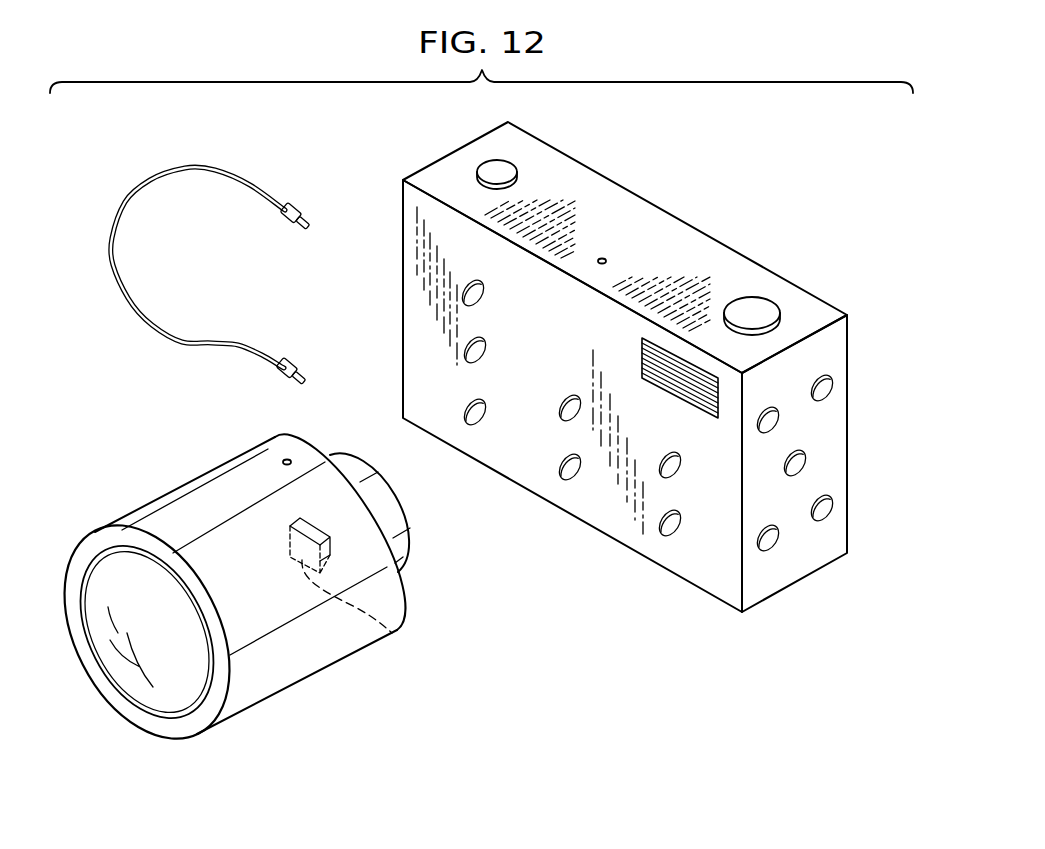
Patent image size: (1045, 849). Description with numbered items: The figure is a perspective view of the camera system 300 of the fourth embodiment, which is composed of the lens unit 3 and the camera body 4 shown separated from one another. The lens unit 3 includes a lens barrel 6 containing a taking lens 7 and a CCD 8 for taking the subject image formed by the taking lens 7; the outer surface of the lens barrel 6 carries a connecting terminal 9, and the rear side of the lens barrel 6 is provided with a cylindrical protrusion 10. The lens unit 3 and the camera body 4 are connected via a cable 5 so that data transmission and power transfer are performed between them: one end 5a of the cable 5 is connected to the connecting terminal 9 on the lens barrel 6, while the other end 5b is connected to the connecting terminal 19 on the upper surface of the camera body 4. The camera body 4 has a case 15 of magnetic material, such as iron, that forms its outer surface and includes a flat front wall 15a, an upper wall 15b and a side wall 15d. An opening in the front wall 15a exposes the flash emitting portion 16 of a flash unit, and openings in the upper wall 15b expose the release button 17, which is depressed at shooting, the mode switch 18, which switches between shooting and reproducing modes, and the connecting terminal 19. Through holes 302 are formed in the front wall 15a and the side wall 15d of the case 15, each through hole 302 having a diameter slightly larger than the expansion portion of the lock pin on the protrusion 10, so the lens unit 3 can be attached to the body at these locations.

The lens unit 3 is at (261, 588).
The camera body 4 is at (659, 386).
The cable 5 is at (204, 277).
The one end of the cable 5a is at (292, 365).
The other end of the cable 5b is at (288, 220).
The lens barrel 6 is at (250, 693).
The taking lens 7 is at (160, 690).
The CCD 8 is at (388, 628).
The connecting terminal 9 is at (287, 462).
The cylindrical protrusion 10 is at (405, 537).
The case 15 is at (659, 390).
The front wall 15a is at (612, 522).
The upper wall 15b is at (698, 244).
The side wall 15d is at (828, 351).
The flash emitting portion 16 is at (655, 378).
The release button 17 is at (505, 168).
The mode switch 18 is at (757, 306).
The connecting terminal 19 is at (604, 258).
The camera system 300 is at (545, 695).
The through holes 302 is at (478, 300).